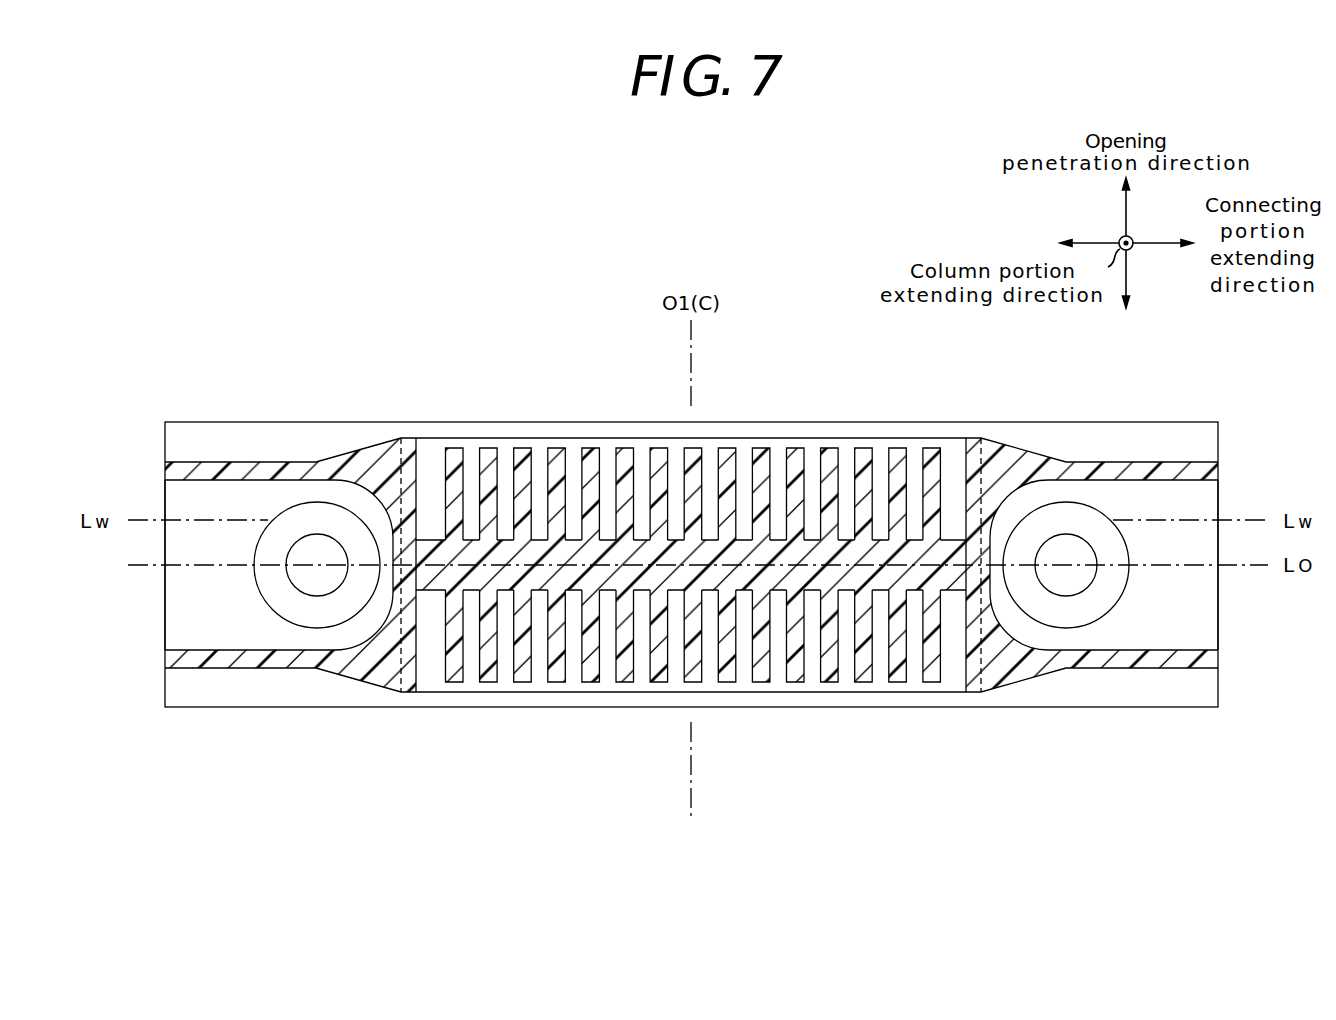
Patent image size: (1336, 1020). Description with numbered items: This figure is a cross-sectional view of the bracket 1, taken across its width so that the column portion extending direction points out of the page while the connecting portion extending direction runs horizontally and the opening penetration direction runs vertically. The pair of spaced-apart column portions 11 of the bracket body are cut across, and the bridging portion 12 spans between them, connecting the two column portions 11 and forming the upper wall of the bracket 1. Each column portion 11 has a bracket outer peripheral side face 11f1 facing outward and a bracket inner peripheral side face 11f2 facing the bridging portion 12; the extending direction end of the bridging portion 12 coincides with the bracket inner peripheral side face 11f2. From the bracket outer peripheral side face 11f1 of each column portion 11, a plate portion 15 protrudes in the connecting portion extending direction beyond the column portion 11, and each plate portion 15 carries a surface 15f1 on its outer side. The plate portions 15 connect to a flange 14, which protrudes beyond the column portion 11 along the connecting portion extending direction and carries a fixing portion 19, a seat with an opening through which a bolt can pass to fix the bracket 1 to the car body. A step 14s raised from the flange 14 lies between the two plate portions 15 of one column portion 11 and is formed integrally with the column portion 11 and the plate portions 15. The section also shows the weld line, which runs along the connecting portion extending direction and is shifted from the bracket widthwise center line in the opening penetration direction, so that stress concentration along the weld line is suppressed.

The bracket 1 is at (697, 528).
The column portion 11 is at (410, 697).
The bracket outer peripheral side face 11f1 is at (402, 662).
The bracket inner peripheral side face 11f2 is at (418, 670).
The bridging portion 12 is at (829, 445).
The flange 14 is at (230, 438).
The step 14s is at (190, 593).
The plate portion 15 is at (271, 460).
The outer surface of plate portion 15f1 is at (203, 462).
The fixing portion 19 is at (272, 584).